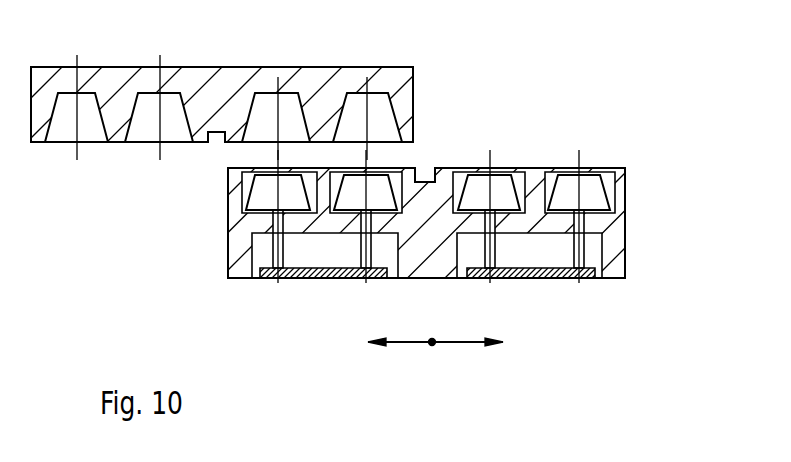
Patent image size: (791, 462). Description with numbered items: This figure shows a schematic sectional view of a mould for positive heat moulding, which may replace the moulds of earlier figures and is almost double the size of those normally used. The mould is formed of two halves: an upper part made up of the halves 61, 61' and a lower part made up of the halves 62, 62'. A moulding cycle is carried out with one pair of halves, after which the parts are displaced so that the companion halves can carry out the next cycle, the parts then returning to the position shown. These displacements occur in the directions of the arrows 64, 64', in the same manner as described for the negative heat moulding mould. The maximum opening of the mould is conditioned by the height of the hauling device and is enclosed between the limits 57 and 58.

The mould half 61 is at (251, 76).
The mould half 61' is at (223, 88).
The opening limit 58 is at (217, 142).
The mould half 62 is at (434, 223).
The mould half 62' is at (375, 216).
The opening limit 57 is at (427, 170).
The arrow 64 is at (467, 369).
The arrow 64' is at (402, 369).